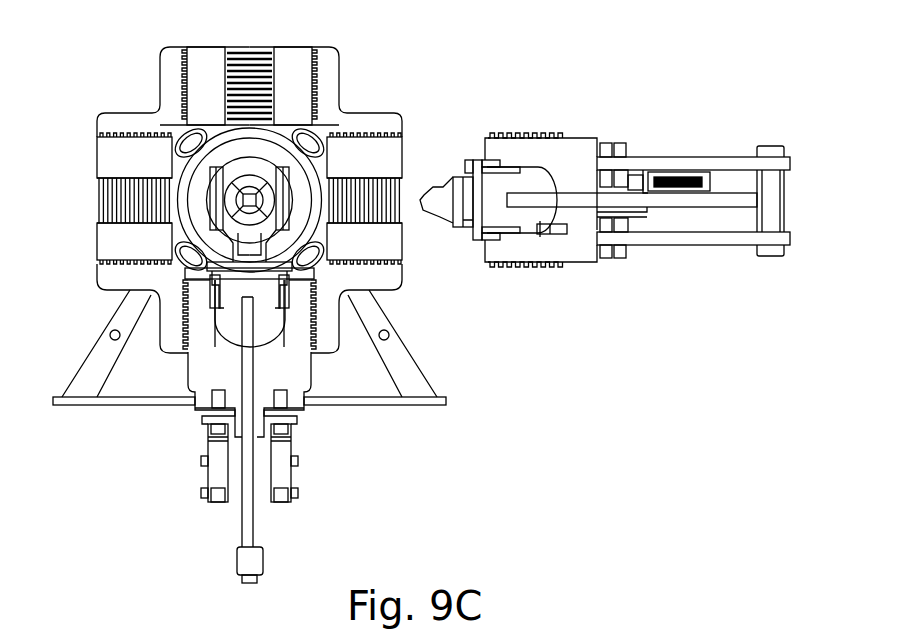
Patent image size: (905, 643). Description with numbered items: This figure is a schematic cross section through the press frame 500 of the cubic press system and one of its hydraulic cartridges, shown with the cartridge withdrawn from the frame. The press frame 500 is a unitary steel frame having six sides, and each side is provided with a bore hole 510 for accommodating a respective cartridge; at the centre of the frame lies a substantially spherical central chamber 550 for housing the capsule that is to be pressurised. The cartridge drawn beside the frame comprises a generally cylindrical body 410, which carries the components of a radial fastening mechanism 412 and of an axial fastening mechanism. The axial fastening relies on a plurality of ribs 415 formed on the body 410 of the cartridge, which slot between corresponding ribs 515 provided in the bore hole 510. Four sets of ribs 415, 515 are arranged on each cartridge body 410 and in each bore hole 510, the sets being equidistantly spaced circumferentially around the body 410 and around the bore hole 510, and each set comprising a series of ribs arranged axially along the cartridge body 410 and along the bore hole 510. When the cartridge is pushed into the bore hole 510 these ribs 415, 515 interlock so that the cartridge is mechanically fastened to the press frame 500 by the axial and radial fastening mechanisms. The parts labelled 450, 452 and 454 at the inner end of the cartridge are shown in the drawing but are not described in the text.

The press frame 500 is at (239, 315).
The bore hole 510 is at (383, 153).
The ribs 515 is at (377, 136).
The central chamber 550 is at (240, 201).
The cartridge body 410 is at (542, 247).
The radial fastening mechanism 412 is at (565, 132).
The ribs 415 is at (520, 133).
The piston head plate 450 is at (473, 242).
The plunger 452 is at (454, 190).
The plunger tip 454 is at (433, 200).